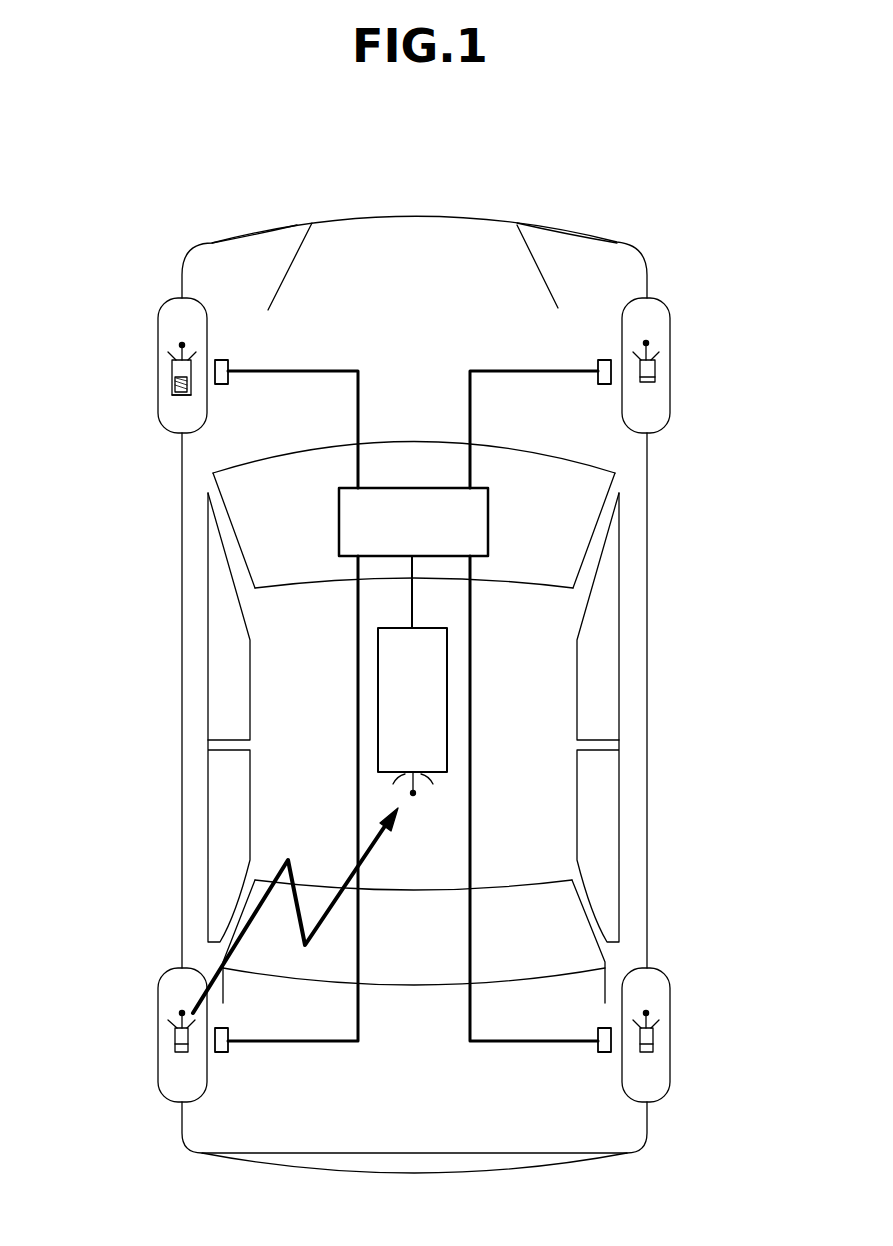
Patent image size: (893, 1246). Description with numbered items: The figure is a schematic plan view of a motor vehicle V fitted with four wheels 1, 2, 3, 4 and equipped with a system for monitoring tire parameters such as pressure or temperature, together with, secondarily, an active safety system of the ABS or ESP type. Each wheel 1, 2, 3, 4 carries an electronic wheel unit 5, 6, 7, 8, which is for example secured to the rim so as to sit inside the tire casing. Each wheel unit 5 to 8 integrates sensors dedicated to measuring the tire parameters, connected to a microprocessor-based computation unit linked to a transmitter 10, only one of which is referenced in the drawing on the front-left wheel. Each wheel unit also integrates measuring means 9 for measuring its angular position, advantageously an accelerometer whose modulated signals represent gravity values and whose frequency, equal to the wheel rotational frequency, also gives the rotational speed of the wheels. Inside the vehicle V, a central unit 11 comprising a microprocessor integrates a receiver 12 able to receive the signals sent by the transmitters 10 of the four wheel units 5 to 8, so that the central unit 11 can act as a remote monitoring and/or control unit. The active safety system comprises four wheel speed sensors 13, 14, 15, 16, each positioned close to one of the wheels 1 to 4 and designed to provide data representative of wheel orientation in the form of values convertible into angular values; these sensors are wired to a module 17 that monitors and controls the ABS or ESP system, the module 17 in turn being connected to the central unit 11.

The motor vehicle V is at (627, 622).
The wheel 1 is at (171, 362).
The wheel 2 is at (658, 362).
The wheel 3 is at (170, 1029).
The wheel 4 is at (655, 1030).
The wheel unit 5 is at (176, 381).
The wheel unit 6 is at (653, 378).
The wheel unit 7 is at (175, 1052).
The wheel unit 8 is at (655, 1048).
The measuring means 9 is at (183, 396).
The transmitter 10 is at (180, 345).
The central unit 11 is at (390, 743).
The receiver 12 is at (411, 794).
The wheel speed sensor 13 is at (226, 360).
The wheel speed sensor 14 is at (604, 360).
The wheel speed sensor 15 is at (228, 1054).
The wheel speed sensor 16 is at (600, 1054).
The monitoring/controlling module 17 is at (437, 530).